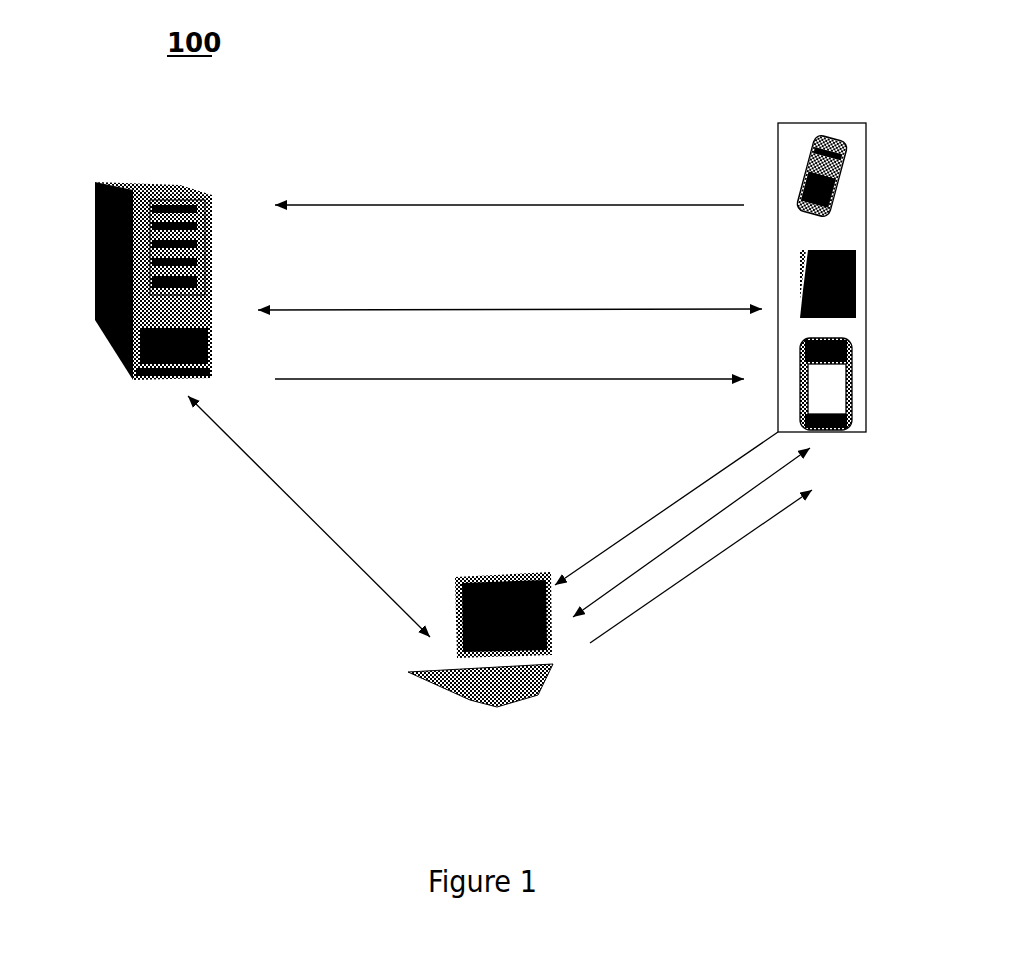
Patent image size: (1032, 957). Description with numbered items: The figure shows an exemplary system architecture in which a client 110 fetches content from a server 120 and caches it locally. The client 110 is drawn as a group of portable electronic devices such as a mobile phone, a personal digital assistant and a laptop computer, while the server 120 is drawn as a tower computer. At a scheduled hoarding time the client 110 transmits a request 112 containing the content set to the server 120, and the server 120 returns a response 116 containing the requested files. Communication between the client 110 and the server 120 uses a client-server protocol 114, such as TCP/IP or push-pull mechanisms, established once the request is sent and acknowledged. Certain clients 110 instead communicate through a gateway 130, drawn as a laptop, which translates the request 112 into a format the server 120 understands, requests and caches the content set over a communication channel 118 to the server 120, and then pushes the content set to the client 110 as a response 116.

The client 110 is at (812, 137).
The request 112 is at (466, 207).
The client-server protocol 114 is at (466, 310).
The response 116 is at (466, 379).
The communication channel 118 is at (309, 516).
The server 120 is at (135, 178).
The gateway 130 is at (463, 680).